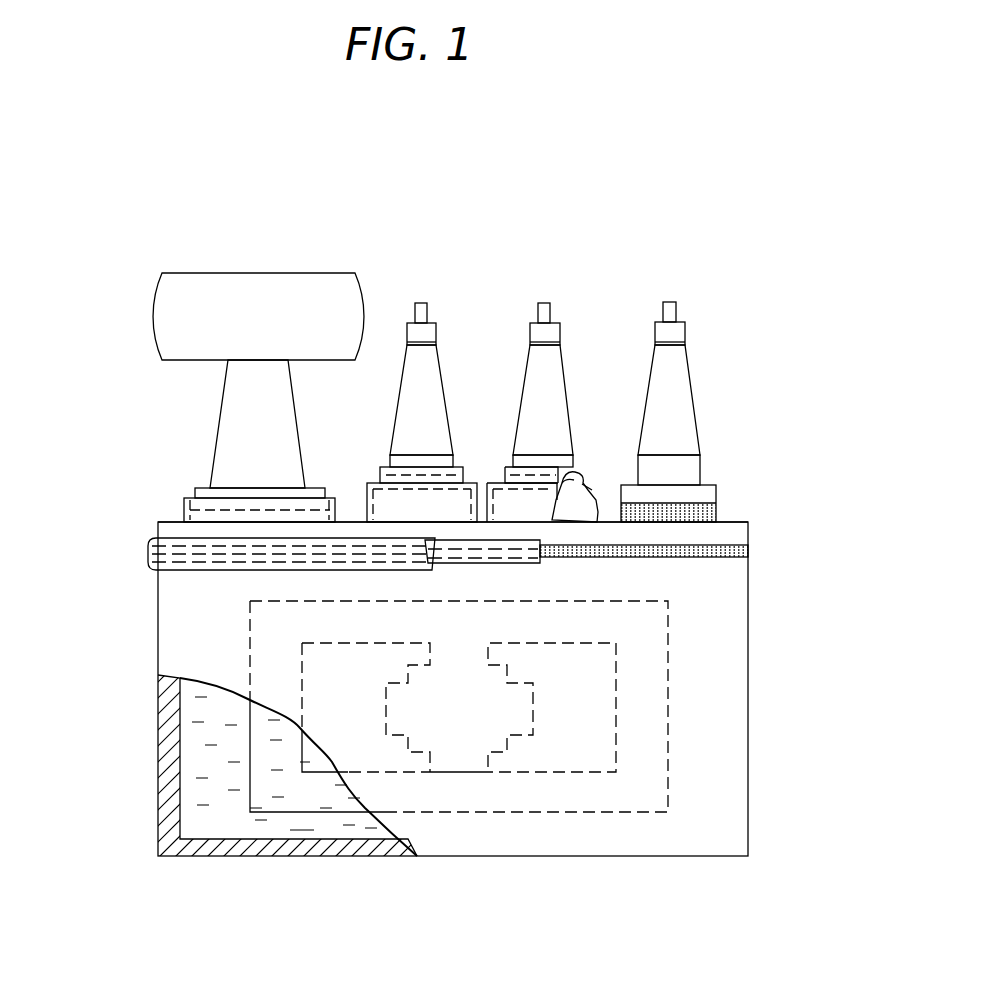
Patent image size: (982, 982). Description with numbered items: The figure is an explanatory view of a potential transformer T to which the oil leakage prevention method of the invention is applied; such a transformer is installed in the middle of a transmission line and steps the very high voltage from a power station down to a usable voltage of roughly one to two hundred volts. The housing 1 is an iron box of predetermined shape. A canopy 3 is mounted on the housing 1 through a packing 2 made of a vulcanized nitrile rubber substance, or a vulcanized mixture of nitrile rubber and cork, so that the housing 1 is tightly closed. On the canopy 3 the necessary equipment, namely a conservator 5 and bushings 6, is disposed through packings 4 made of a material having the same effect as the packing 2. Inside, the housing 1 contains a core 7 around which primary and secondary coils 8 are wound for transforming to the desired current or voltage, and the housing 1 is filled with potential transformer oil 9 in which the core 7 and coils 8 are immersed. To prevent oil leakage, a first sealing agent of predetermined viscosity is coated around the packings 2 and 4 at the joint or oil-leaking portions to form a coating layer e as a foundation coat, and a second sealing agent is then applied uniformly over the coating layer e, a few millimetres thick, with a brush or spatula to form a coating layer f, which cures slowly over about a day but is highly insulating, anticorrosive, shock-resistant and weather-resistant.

The housing 1 is at (727, 676).
The packing 2 is at (727, 548).
The canopy 3 is at (727, 530).
The packings 4 is at (225, 508).
The conservator 5 is at (180, 323).
The bushings 6 is at (677, 380).
The core 7 is at (310, 803).
The primary and secondary coils 8 is at (437, 735).
The potential transformer oil 9 is at (213, 822).
The potential transformer T is at (647, 252).
The coating layer e is at (460, 548).
The coating layer f is at (183, 507).